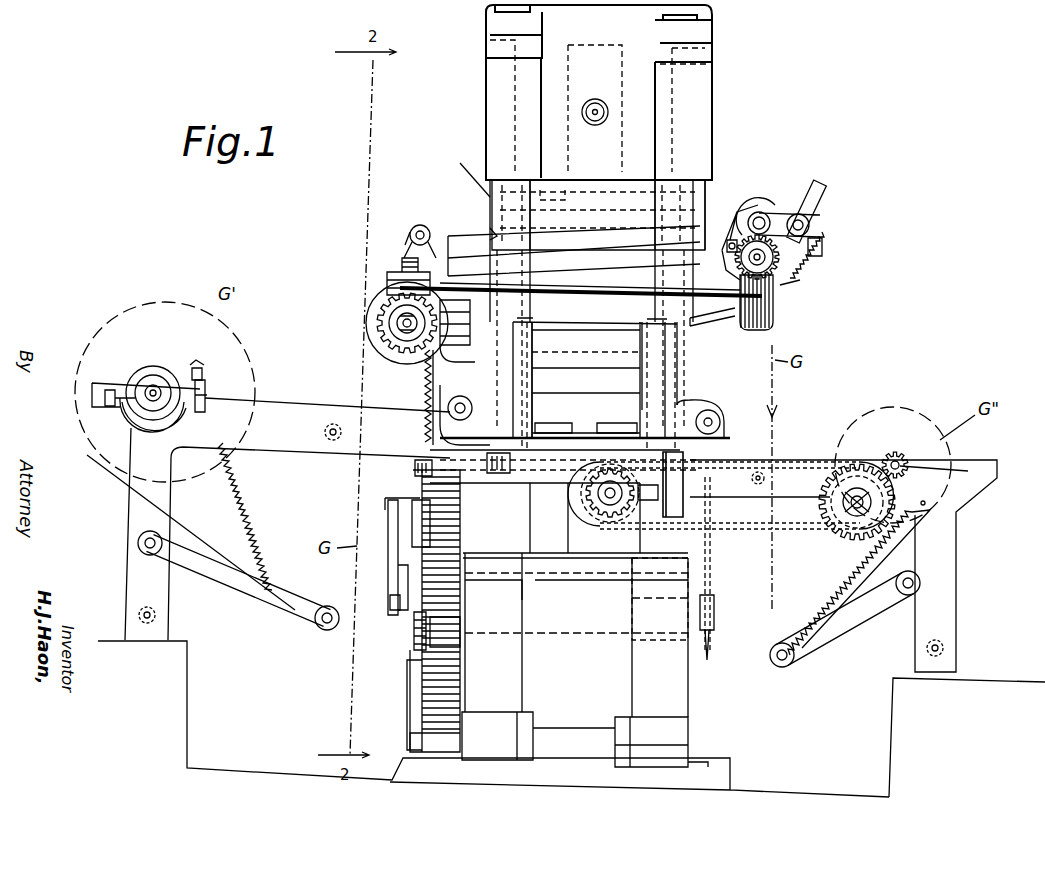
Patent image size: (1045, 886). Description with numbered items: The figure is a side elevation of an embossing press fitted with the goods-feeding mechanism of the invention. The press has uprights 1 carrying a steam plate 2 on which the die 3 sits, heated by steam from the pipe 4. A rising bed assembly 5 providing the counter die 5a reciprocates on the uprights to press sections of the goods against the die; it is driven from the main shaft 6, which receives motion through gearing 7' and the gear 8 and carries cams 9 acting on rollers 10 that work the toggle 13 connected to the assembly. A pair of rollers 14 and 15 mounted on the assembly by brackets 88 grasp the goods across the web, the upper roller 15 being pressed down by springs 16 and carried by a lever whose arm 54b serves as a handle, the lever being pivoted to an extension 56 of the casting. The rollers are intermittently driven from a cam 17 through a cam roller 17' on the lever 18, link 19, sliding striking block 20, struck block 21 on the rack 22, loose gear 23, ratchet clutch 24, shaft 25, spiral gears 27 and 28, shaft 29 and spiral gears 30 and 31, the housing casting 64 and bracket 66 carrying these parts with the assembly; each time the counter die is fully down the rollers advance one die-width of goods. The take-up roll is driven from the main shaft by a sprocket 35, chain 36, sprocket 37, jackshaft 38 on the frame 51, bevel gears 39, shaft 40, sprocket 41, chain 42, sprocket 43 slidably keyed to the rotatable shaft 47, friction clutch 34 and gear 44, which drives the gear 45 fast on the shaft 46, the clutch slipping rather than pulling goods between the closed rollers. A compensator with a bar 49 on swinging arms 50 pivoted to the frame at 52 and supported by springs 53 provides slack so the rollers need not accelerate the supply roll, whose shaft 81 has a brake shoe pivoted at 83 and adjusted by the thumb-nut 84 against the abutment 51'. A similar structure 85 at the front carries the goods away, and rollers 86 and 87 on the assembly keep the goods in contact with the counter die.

The uprights 1 is at (693, 192).
The steam plate 2 is at (680, 214).
The die 3 is at (655, 243).
The pipe 4 is at (608, 112).
The rising bed assembly 5 is at (578, 378).
The counter die 5a is at (489, 235).
The main shaft 6 is at (714, 612).
The gearing 7' is at (388, 700).
The gear 8 is at (440, 702).
The cams 9 is at (625, 545).
The rollers 10 is at (578, 428).
The toggle 13 is at (672, 560).
The lower roller 14 is at (822, 250).
The upper roller 15 is at (766, 214).
The springs 16 is at (800, 283).
The cam 17 is at (421, 652).
The cam roller 17' is at (371, 498).
The lever 18 is at (398, 562).
The link 19 is at (390, 602).
The sliding striking block 20 is at (412, 522).
The struck block 21 is at (416, 468).
The rack 22 is at (432, 395).
The loose gear 23 is at (397, 333).
The ratchet clutch 24 is at (368, 317).
The shaft 25 is at (400, 341).
The spiral gear 27 is at (416, 336).
The spiral gear 28 is at (403, 262).
The shaft 29 is at (590, 288).
The spiral gear 30 is at (770, 326).
The spiral gear 31 is at (738, 260).
The friction clutch 34 is at (848, 520).
The sprocket 35 is at (708, 660).
The chain 36 is at (712, 556).
The sprocket 37 is at (700, 498).
The jackshaft 38 is at (700, 464).
The bevel gears 39 is at (645, 503).
The shaft 40 is at (612, 506).
The sprocket 41 is at (598, 516).
The chain 42 is at (745, 530).
The sprocket 43 is at (833, 503).
The gear 44 is at (842, 486).
The gear 45 is at (910, 467).
The shaft 46 is at (905, 462).
The rotatable shaft 47 is at (862, 490).
The bar 49 is at (327, 631).
The swinging arm 50 is at (228, 582).
The frame 51 is at (568, 590).
The abutment 51' is at (248, 393).
The pivot 52 is at (141, 548).
The spring 53 is at (262, 525).
The arm 54b is at (825, 200).
The extension 56 is at (825, 265).
The housing casting 64 is at (450, 342).
The bracket 66 is at (470, 364).
The shaft 81 is at (160, 384).
The pivot 83 is at (110, 406).
The thumb-nut 84 is at (205, 373).
The structure 85 is at (872, 620).
The roller 86 is at (417, 225).
The roller 87 is at (733, 236).
The bracket 88 is at (725, 322).